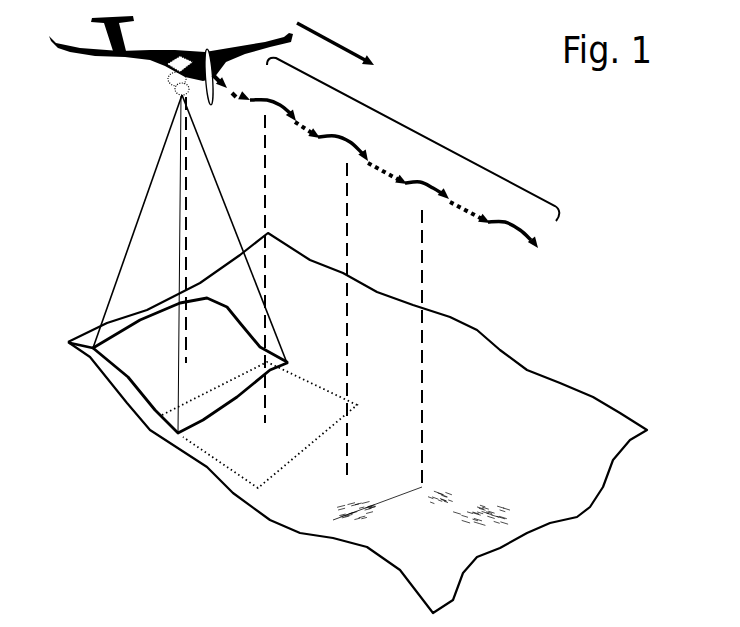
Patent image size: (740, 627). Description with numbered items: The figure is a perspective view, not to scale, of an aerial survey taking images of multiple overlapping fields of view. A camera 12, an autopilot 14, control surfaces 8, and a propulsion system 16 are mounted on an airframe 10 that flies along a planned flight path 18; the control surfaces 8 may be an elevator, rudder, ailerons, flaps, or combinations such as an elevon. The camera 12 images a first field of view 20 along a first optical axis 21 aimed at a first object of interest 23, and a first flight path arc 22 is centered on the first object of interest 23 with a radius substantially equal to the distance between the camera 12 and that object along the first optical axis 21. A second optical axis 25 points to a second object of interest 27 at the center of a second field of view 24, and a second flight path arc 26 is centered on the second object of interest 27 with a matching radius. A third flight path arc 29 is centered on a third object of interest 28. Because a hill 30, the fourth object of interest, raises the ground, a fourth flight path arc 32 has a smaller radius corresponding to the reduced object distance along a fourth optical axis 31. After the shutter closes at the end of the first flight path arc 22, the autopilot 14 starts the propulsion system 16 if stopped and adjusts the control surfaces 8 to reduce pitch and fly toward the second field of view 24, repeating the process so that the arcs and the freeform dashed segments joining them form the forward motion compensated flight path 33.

The control surfaces 8 is at (97, 33).
The airframe 10 is at (171, 57).
The camera 12 is at (155, 82).
The autopilot 14 is at (167, 46).
The propulsion system 16 is at (229, 63).
The planned flight path 18 is at (339, 42).
The first field of view 20 is at (351, 423).
The first optical axis 21 is at (178, 365).
The first flight path arc 22 is at (241, 82).
The first object of interest 23 is at (190, 264).
The second field of view 24 is at (231, 425).
The second optical axis 25 is at (196, 296).
The second flight path arc 26 is at (289, 112).
The second object of interest 27 is at (215, 386).
The third object of interest 28 is at (281, 350).
The third flight path arc 29 is at (362, 152).
The hill 30 is at (420, 532).
The fourth optical axis 31 is at (348, 382).
The fourth flight path arc 32 is at (471, 207).
The forward motion compensated flight path 33 is at (413, 139).